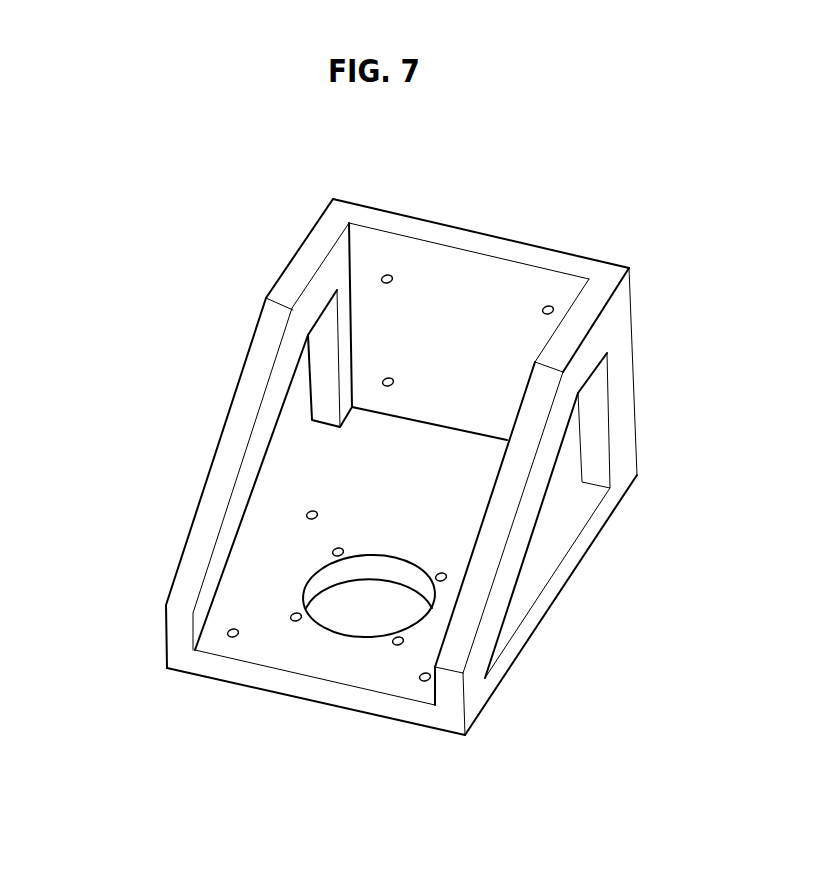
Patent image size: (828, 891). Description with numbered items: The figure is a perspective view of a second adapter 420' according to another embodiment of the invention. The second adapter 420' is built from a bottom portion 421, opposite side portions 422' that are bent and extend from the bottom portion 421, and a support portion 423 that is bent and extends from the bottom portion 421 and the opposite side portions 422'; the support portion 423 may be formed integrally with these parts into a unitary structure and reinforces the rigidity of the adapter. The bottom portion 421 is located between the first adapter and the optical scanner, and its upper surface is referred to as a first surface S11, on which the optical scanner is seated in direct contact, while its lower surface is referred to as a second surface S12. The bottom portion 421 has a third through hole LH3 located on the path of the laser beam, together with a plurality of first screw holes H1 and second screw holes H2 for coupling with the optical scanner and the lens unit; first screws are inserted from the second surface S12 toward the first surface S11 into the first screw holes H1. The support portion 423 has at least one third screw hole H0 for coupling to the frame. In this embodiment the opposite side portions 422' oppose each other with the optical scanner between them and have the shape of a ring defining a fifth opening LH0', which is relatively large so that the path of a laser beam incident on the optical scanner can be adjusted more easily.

The second adapter 420' is at (372, 489).
The bottom portion 421 is at (233, 670).
The opposite side portions 422' is at (375, 438).
The support portion 423 is at (483, 242).
The third screw hole H0 is at (543, 315).
The first screw hole H1 is at (294, 613).
The second screw hole H2 is at (229, 631).
The first surface S11 is at (257, 605).
The second surface S12 is at (288, 700).
The fifth opening LH0' is at (583, 515).
The third through hole LH3 is at (371, 596).